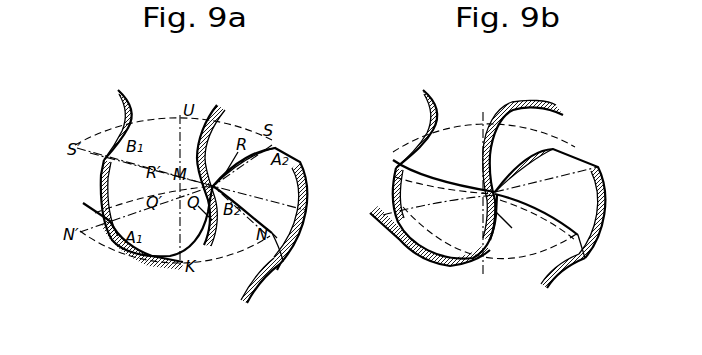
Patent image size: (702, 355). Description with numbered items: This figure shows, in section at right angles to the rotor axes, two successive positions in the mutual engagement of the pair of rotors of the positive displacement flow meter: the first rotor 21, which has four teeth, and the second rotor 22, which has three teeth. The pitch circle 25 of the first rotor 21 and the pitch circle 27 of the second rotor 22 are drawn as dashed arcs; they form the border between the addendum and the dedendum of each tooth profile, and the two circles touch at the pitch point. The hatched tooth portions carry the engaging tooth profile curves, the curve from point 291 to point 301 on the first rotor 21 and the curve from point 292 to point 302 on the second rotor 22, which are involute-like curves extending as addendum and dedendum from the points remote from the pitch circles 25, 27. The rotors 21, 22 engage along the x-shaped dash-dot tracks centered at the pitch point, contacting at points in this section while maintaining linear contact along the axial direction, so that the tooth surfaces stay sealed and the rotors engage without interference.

In FIG. 9A, the first rotor 21 is at (163, 88).
In FIG. 9B, the first rotor 21 is at (478, 97).
In FIG. 9A, the second rotor 22 is at (167, 303).
In FIG. 9B, the second rotor 22 is at (478, 301).
In FIG. 9A, the pitch circle of the first rotor 25 is at (275, 147).
In FIG. 9B, the pitch circle of the first rotor 25 is at (585, 150).
In FIG. 9A, the pitch circle of the second rotor 27 is at (279, 264).
In FIG. 9B, the pitch circle of the second rotor 27 is at (585, 258).
In FIG. 9A, the engaging tooth profile curve point of the first rotor 291 is at (103, 178).
In FIG. 9B, the engaging tooth profile curve point of the first rotor 291 is at (394, 174).
In FIG. 9A, the engaging tooth profile curve point of the second rotor 292 is at (216, 186).
In FIG. 9B, the engaging tooth profile curve point of the second rotor 292 is at (503, 193).
In FIG. 9A, the engaging tooth profile curve point of the first rotor 301 is at (108, 143).
In FIG. 9B, the engaging tooth profile curve point of the first rotor 301 is at (402, 142).
In FIG. 9A, the engaging tooth profile curve point of the second rotor 302 is at (206, 212).
In FIG. 9B, the engaging tooth profile curve point of the second rotor 302 is at (500, 213).